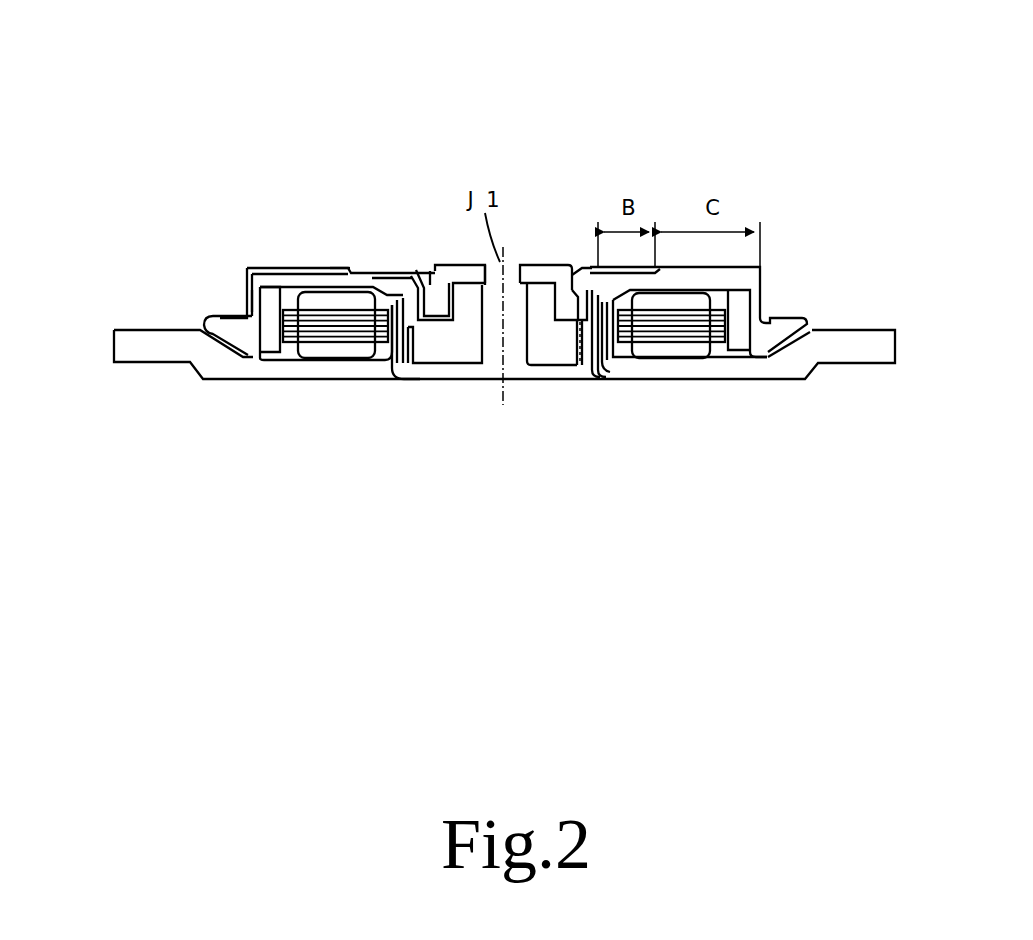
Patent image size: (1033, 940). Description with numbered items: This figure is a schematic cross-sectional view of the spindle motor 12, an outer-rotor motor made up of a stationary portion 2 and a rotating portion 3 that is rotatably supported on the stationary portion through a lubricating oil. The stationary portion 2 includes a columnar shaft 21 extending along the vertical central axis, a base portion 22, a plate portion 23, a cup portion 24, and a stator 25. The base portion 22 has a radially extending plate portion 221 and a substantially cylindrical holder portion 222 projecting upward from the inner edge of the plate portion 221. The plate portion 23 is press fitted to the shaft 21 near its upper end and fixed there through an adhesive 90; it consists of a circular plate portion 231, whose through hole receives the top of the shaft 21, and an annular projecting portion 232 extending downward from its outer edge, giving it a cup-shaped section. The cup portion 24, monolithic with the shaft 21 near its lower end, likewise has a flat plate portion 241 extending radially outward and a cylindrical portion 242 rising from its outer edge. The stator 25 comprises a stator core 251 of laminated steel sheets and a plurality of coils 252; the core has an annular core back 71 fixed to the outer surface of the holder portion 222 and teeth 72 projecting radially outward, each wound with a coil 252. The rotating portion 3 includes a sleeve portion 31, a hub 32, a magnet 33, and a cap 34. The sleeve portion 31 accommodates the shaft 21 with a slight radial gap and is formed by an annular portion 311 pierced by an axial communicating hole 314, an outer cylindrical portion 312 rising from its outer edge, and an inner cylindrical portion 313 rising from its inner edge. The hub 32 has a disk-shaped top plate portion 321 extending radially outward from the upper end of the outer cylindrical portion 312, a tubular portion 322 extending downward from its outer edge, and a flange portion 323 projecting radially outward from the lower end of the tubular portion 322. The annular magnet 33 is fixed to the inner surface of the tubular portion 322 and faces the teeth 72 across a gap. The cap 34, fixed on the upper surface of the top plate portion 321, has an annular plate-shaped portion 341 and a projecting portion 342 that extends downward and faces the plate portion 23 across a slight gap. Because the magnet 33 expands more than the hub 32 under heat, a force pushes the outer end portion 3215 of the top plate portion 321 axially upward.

The motor 12 is at (73, 58).
The stationary portion 2 is at (782, 394).
The shaft 21 is at (490, 336).
The base portion 22 is at (690, 437).
The plate portion 221 is at (690, 373).
The holder portion 222 is at (613, 348).
The plate portion 23 is at (548, 173).
The circular plate portion 231 is at (538, 275).
The annular projecting portion 232 is at (570, 308).
The cup portion 24 is at (412, 451).
The flat plate portion 241 is at (433, 375).
The cylindrical portion 242 is at (400, 350).
The stator 25 is at (316, 448).
The stator core 251 is at (352, 330).
The coil 252 is at (322, 298).
The rotating portion 3 is at (808, 322).
The sleeve portion 31 is at (584, 353).
The annular portion 311 is at (556, 336).
The outer cylindrical portion 312 is at (590, 300).
The inner cylindrical portion 313 is at (538, 330).
The communicating hole 314 is at (577, 340).
The hub 32 is at (248, 200).
The top plate portion 321 is at (293, 278).
The tubular portion 322 is at (252, 298).
The flange portion 323 is at (213, 323).
The outer end portion 3215 is at (250, 268).
The magnet 33 is at (273, 318).
The cap 34 is at (390, 163).
The plate-shaped portion 341 is at (387, 272).
The projecting portion 342 is at (428, 274).
The core back 71 is at (625, 313).
The teeth 72 is at (680, 323).
The adhesive 90 is at (340, 268).